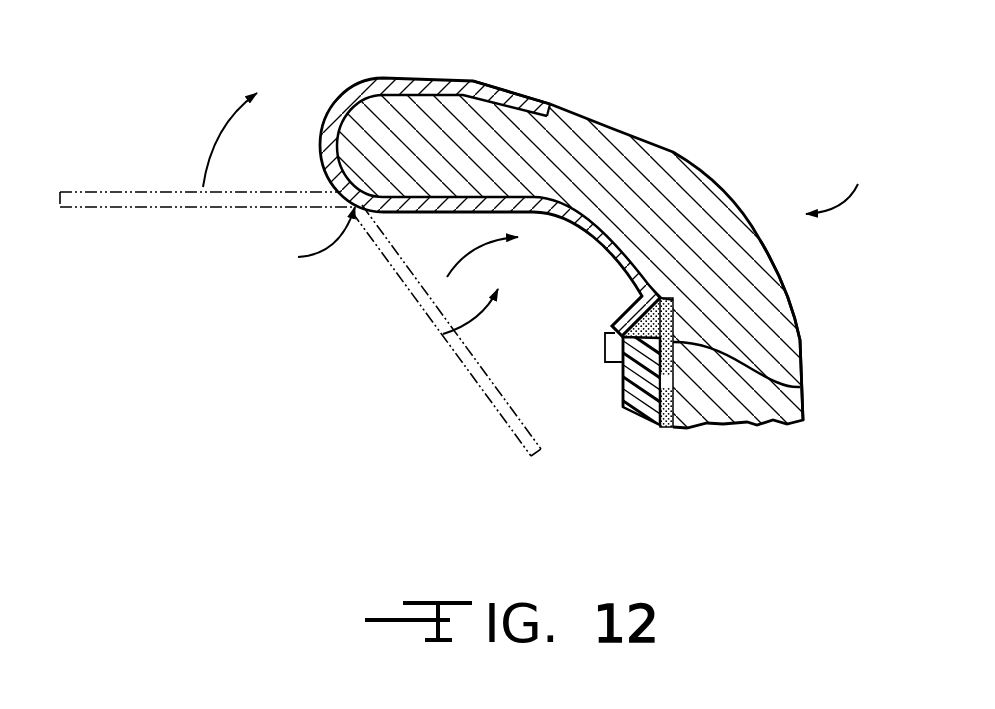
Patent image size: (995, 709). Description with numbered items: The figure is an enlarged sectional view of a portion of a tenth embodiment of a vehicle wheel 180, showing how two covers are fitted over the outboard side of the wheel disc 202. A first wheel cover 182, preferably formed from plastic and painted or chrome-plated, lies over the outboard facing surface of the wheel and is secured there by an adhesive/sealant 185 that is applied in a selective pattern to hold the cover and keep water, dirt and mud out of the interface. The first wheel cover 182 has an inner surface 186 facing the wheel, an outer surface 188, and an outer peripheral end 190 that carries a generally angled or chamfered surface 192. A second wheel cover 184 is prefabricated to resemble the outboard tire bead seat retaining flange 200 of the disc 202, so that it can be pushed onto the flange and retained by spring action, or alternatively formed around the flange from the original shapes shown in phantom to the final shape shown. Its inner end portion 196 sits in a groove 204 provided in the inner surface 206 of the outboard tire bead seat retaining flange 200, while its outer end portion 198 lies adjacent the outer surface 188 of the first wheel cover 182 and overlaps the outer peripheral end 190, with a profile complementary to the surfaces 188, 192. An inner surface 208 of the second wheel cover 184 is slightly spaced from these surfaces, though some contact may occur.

The vehicle wheel 180 is at (443, 334).
The first wheel cover 182 is at (620, 412).
The second wheel cover 184 is at (303, 238).
The adhesive/sealant 185 is at (664, 420).
The inner surface 186 is at (803, 387).
The outer surface 188 is at (623, 383).
The outer peripheral end 190 is at (619, 333).
The angled or chamfered surface 192 is at (637, 303).
The inner end portion 196 is at (484, 82).
The outer end portion 198 is at (610, 348).
The outboard tire bead seat retaining flange 200 is at (718, 184).
The wheel disc 202 is at (840, 187).
The groove 204 is at (527, 102).
The inner surface 206 is at (800, 342).
The inner surface 208 is at (667, 308).